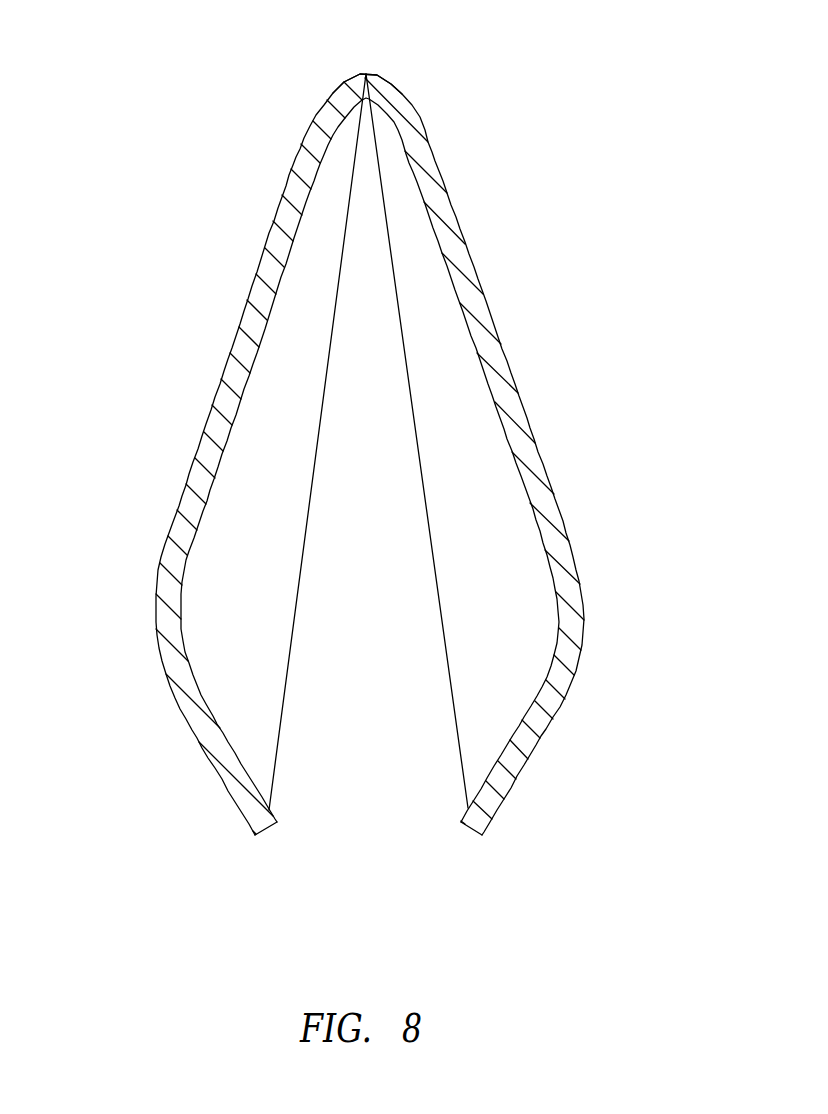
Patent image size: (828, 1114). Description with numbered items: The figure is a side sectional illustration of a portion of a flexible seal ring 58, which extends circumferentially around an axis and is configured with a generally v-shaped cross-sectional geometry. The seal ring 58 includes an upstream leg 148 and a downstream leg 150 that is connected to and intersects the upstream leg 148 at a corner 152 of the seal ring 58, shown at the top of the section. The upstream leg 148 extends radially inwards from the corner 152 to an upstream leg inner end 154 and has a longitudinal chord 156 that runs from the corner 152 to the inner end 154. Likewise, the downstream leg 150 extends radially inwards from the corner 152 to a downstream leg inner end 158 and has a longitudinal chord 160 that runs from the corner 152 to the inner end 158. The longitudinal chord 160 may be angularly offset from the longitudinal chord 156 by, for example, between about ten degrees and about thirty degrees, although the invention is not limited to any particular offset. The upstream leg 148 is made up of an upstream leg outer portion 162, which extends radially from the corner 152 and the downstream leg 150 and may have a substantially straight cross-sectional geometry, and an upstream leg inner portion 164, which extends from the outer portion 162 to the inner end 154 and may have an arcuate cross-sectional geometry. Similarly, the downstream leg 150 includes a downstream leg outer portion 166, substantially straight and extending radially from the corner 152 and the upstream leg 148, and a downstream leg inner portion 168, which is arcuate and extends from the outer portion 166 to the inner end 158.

The seal ring 58 is at (131, 145).
The upstream leg 148 is at (203, 424).
The downstream leg 150 is at (535, 422).
The corner 152 is at (382, 71).
The upstream leg inner end 154 is at (261, 838).
The longitudinal chord 156 is at (296, 626).
The downstream leg inner end 158 is at (477, 837).
The longitudinal chord 160 is at (448, 673).
The upstream leg outer portion 162 is at (265, 288).
The upstream leg inner portion 164 is at (166, 653).
The downstream leg outer portion 166 is at (465, 295).
The downstream leg inner portion 168 is at (567, 660).